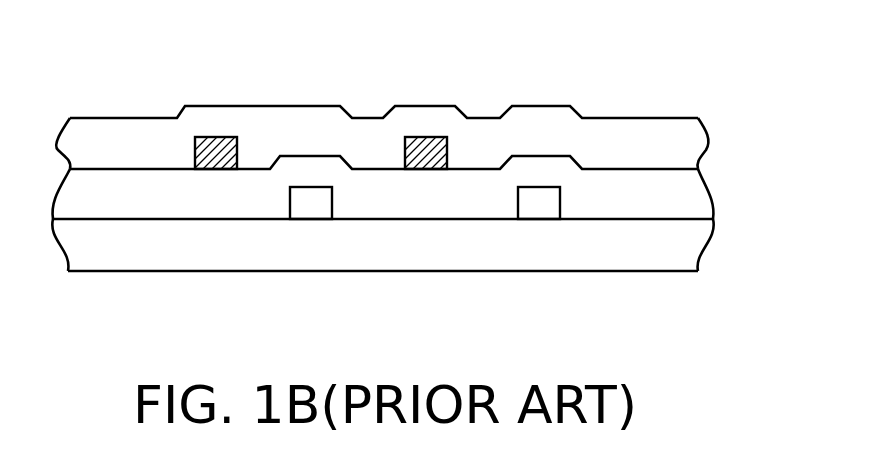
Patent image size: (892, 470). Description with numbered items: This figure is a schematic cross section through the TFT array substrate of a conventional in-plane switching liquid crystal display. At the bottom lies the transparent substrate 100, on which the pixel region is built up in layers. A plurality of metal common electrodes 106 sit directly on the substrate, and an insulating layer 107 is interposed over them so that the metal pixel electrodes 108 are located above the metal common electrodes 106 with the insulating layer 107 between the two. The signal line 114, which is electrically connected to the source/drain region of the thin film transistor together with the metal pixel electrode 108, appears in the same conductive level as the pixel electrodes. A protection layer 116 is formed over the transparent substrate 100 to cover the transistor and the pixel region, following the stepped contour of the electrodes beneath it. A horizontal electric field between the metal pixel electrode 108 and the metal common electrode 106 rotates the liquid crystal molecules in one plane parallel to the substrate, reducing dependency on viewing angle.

The transparent substrate 100 is at (692, 244).
The metal common electrode 106 is at (308, 197).
The insulating layer 107 is at (692, 199).
The metal pixel electrode 108 is at (427, 145).
The signal line 114 is at (212, 145).
The protection layer 116 is at (542, 115).